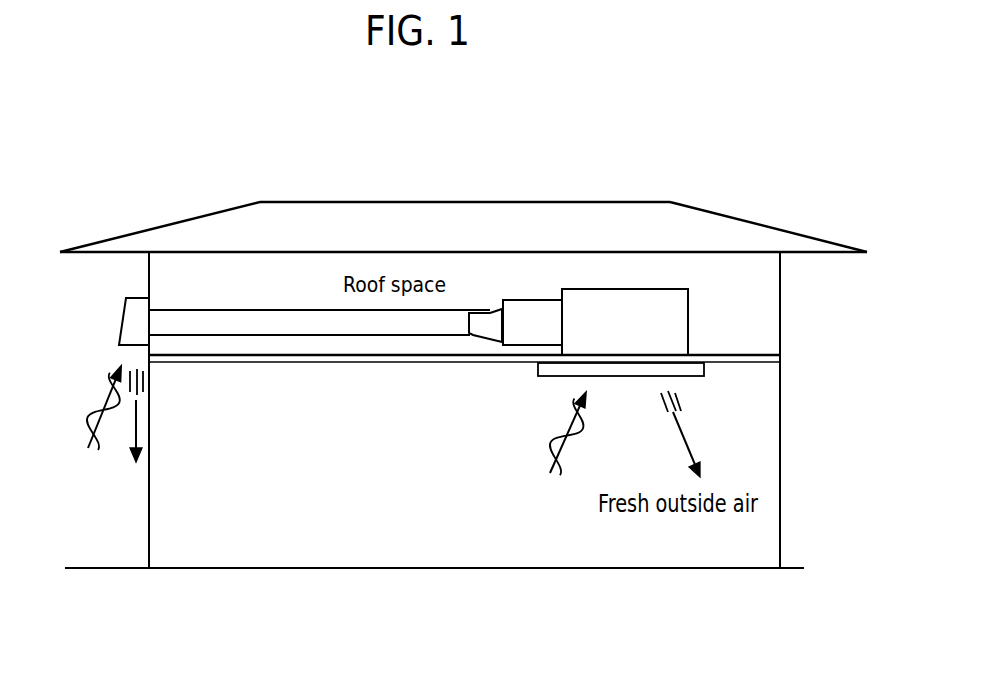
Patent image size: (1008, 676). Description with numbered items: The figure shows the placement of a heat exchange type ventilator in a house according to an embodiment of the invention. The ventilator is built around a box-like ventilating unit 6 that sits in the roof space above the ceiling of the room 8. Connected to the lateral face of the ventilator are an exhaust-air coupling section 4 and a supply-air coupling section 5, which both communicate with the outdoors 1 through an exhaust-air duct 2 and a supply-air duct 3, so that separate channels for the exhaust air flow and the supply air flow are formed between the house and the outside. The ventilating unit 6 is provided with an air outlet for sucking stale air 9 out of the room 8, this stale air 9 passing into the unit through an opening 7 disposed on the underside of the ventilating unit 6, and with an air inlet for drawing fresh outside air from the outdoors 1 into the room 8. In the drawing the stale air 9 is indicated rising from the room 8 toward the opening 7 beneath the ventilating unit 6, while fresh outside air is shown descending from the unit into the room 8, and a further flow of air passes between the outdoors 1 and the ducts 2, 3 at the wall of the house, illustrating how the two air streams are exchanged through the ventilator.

The outdoors 1 is at (78, 363).
The exhaust-air duct 2 is at (319, 237).
The supply-air duct 3 is at (310, 322).
The exhaust-air coupling section 4 is at (515, 242).
The supply-air coupling section 5 is at (487, 322).
The ventilating unit 6 is at (642, 307).
The opening 7 is at (688, 367).
The room 8 is at (285, 478).
The stale air 9 is at (559, 445).